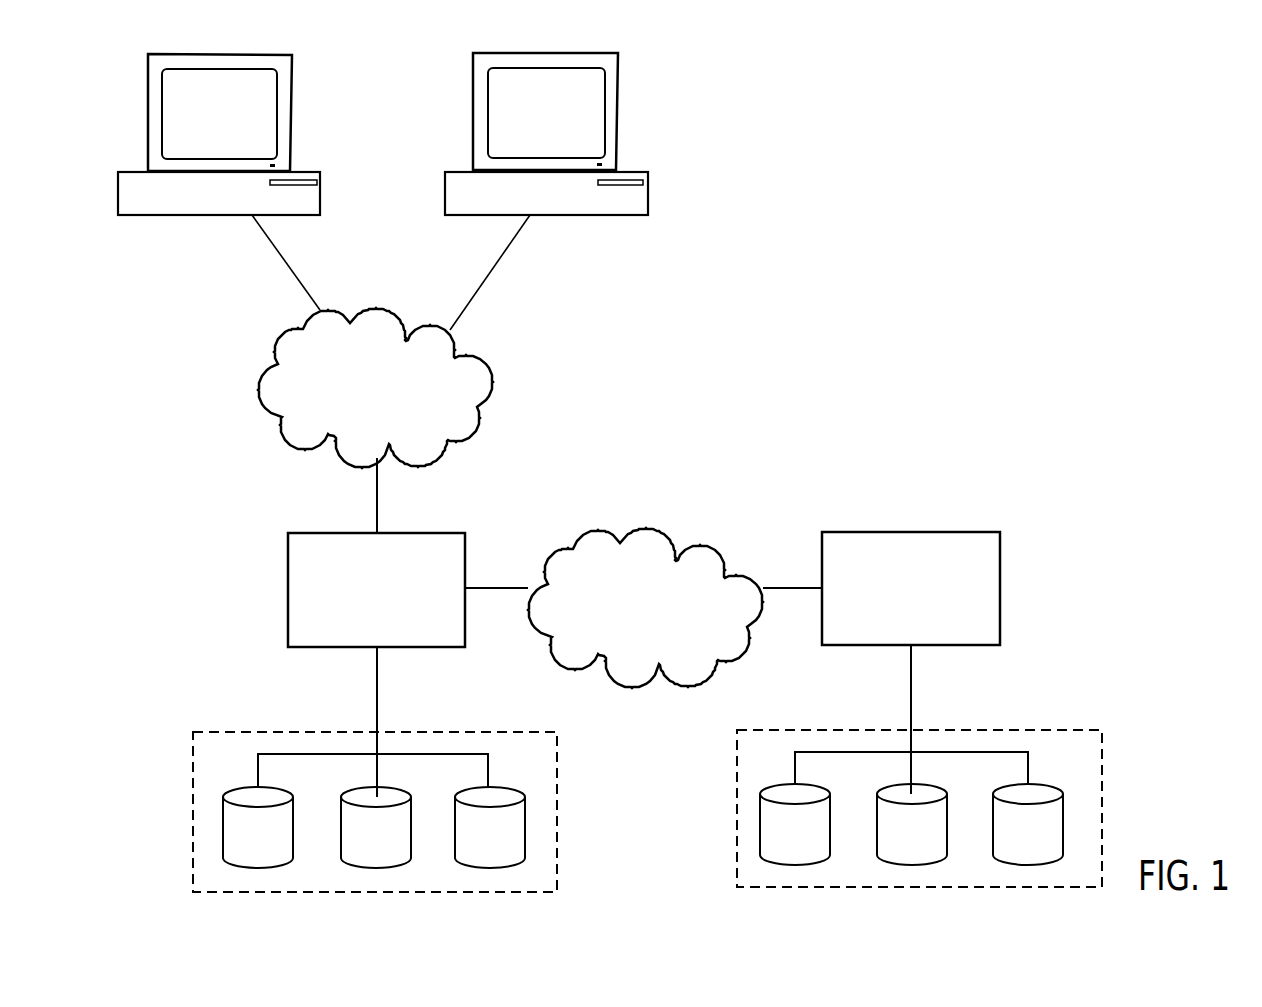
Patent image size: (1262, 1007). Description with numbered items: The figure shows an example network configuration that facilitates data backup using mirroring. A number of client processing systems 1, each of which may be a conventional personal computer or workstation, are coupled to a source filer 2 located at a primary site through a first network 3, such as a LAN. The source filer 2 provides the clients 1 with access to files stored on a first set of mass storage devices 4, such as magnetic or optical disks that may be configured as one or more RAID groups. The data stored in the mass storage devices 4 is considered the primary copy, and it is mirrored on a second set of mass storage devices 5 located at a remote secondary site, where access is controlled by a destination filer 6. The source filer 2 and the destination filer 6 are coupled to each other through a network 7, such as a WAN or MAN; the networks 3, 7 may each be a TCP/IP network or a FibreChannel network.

The client processing systems 1 is at (292, 98).
The source filer 2 is at (373, 631).
The first network 3 is at (368, 446).
The first set of mass storage devices 4 is at (531, 873).
The second set of mass storage devices 5 is at (1071, 866).
The destination filer 6 is at (908, 628).
The network 7 is at (638, 666).